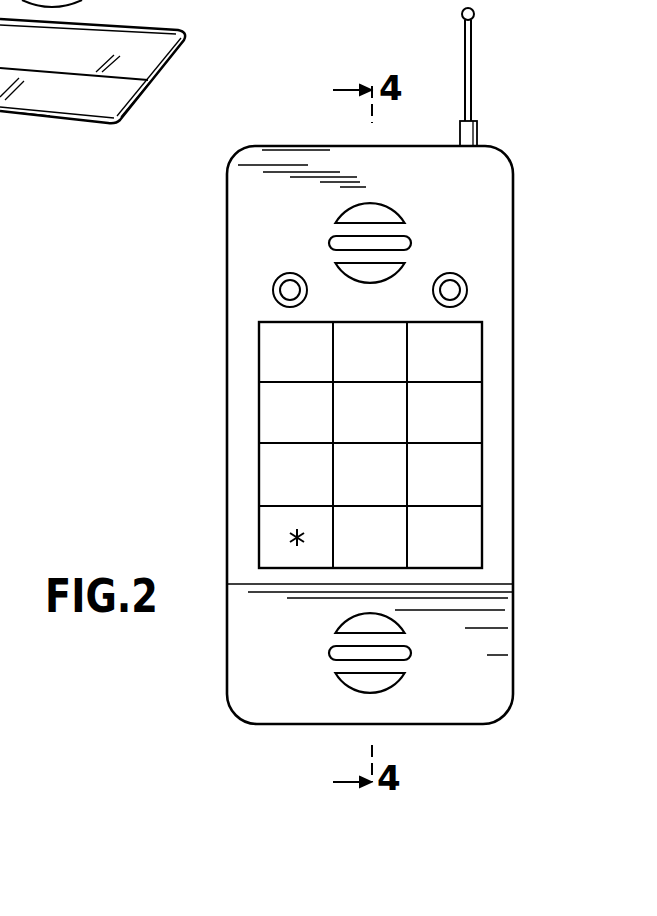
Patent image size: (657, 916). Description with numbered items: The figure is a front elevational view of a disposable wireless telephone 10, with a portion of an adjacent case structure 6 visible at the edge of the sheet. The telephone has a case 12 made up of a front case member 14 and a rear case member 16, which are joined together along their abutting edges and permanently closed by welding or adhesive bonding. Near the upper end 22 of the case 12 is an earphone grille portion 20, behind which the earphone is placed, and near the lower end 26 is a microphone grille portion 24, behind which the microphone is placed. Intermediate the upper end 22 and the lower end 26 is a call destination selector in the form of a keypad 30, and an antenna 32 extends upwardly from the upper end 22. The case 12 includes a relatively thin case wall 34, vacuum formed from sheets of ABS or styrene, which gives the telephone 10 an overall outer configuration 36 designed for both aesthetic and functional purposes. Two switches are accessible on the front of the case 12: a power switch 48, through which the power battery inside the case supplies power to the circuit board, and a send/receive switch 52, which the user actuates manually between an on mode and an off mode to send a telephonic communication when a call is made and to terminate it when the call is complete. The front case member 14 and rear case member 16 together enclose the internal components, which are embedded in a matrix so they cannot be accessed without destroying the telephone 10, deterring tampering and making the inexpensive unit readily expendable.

In FIG. 1, the base unit 6 is at (47, 118).
In FIG. 2, the disposable wireless telephone 10 is at (227, 182).
In FIG. 2, the case 12 is at (227, 403).
In FIG. 1, the front case member 14 is at (164, 58).
In FIG. 2, the front case member 14 is at (235, 480).
In FIG. 1, the rear case member 16 is at (136, 103).
In FIG. 2, the earphone grille portion 20 is at (378, 205).
In FIG. 2, the upper end 22 is at (332, 146).
In FIG. 2, the microphone grille portion 24 is at (403, 652).
In FIG. 2, the lower end 26 is at (460, 724).
In FIG. 2, the keypad 30 is at (262, 522).
In FIG. 2, the antenna 32 is at (474, 52).
In FIG. 2, the case wall 34 is at (232, 667).
In FIG. 2, the overall outer configuration 36 is at (515, 215).
In FIG. 2, the power switch 48 is at (287, 292).
In FIG. 2, the send/receive switch 52 is at (455, 287).